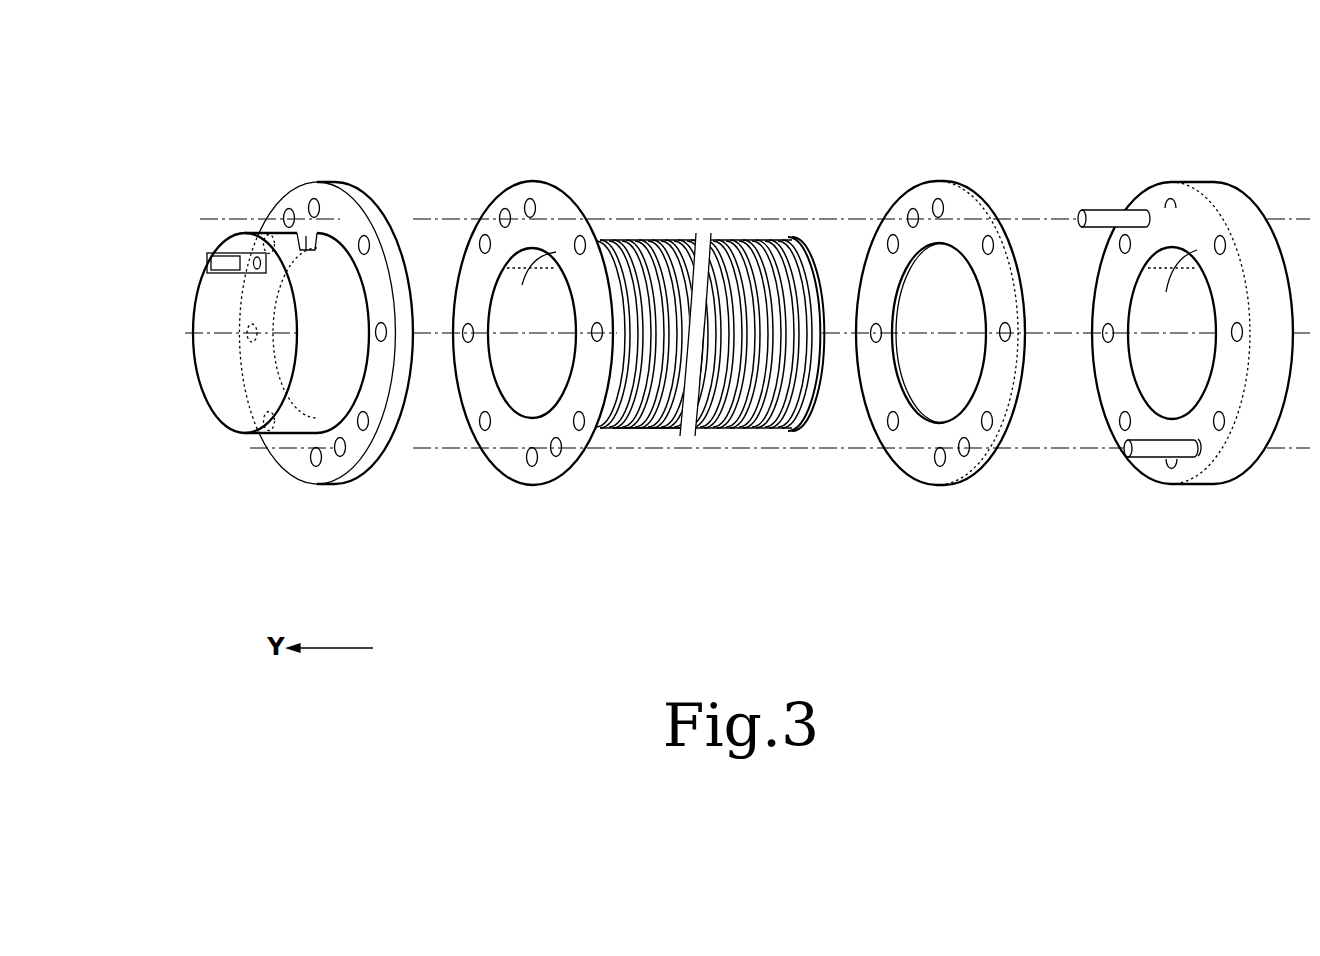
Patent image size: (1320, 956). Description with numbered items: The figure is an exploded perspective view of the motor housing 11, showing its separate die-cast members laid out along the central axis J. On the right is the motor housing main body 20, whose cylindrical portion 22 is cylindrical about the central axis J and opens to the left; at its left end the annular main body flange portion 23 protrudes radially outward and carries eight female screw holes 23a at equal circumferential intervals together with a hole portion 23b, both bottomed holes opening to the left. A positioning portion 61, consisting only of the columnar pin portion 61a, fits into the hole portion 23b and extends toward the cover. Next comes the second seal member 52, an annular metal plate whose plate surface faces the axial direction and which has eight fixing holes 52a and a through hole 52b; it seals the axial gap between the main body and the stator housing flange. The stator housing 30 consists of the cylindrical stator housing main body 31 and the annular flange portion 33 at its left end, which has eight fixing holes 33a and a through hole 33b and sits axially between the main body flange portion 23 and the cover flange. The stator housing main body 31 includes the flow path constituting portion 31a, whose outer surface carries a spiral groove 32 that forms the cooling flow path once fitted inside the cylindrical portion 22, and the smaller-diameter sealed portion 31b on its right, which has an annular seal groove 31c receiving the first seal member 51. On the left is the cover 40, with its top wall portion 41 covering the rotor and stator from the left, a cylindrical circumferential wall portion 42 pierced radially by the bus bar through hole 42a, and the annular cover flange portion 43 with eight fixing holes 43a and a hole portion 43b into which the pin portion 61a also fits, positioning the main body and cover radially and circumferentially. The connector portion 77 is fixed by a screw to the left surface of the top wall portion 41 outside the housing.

The motor housing 11 is at (1048, 96).
The motor housing main body 20 is at (1244, 183).
The cylindrical portion 22 is at (1289, 210).
The main body flange portion 23 is at (1152, 339).
The female screw hole 23a is at (1219, 236).
The hole portion 23b is at (1138, 210).
The stator housing 30 is at (543, 172).
The stator housing main body 31 is at (712, 307).
The flow path constituting portion 31a is at (678, 243).
The sealed portion 31b is at (800, 250).
The seal groove 31c is at (815, 347).
The groove 32 is at (681, 415).
The flange portion 33 is at (518, 332).
The fixing hole 33a is at (580, 237).
The through hole 33b is at (505, 210).
The cover 40 is at (320, 172).
The top wall portion 41 is at (200, 302).
The circumferential wall portion 42 is at (300, 405).
The bus bar through hole 42a is at (306, 232).
The cover flange portion 43 is at (296, 332).
The fixing hole 43a is at (366, 237).
The hole portion 43b is at (288, 210).
The first seal member 51 is at (792, 432).
The second seal member 52 is at (922, 334).
The fixing hole 52a is at (987, 237).
The through hole 52b is at (912, 210).
The positioning portion 61 is at (1120, 350).
The pin portion 61a is at (1108, 208).
The connector portion 77 is at (222, 253).
The central axis J is at (240, 338).